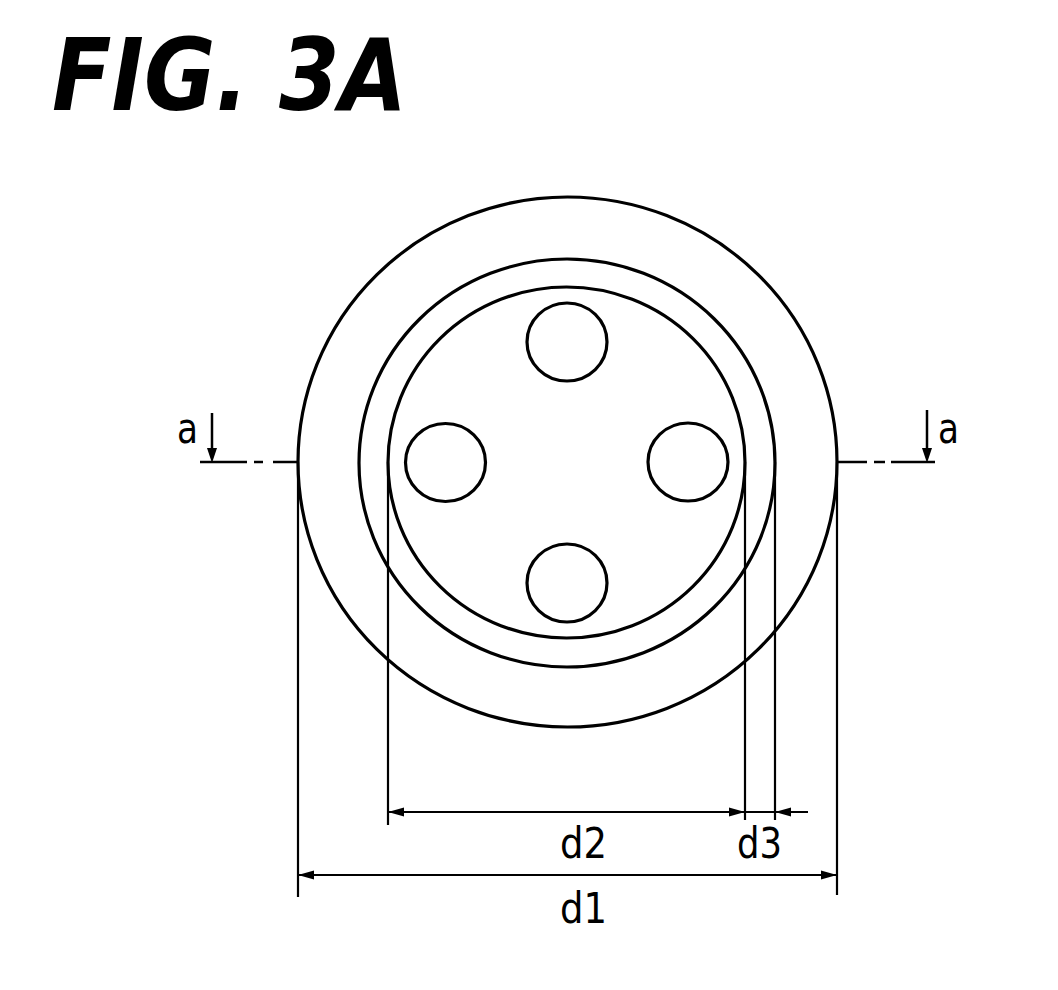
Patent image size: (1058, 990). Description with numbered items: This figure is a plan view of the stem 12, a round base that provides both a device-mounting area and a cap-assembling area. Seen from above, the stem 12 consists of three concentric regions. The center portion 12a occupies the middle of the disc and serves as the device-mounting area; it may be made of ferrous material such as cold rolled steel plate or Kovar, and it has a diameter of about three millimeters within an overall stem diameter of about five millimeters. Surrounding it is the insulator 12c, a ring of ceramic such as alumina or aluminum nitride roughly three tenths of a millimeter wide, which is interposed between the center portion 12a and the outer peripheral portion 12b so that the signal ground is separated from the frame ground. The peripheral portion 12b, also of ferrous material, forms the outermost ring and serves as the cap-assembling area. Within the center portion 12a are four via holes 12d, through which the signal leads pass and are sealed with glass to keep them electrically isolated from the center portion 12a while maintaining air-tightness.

The stem 12 is at (660, 181).
The center portion 12a is at (645, 325).
The peripheral portion 12b is at (365, 312).
The insulator 12c is at (570, 278).
The via holes 12d is at (664, 450).